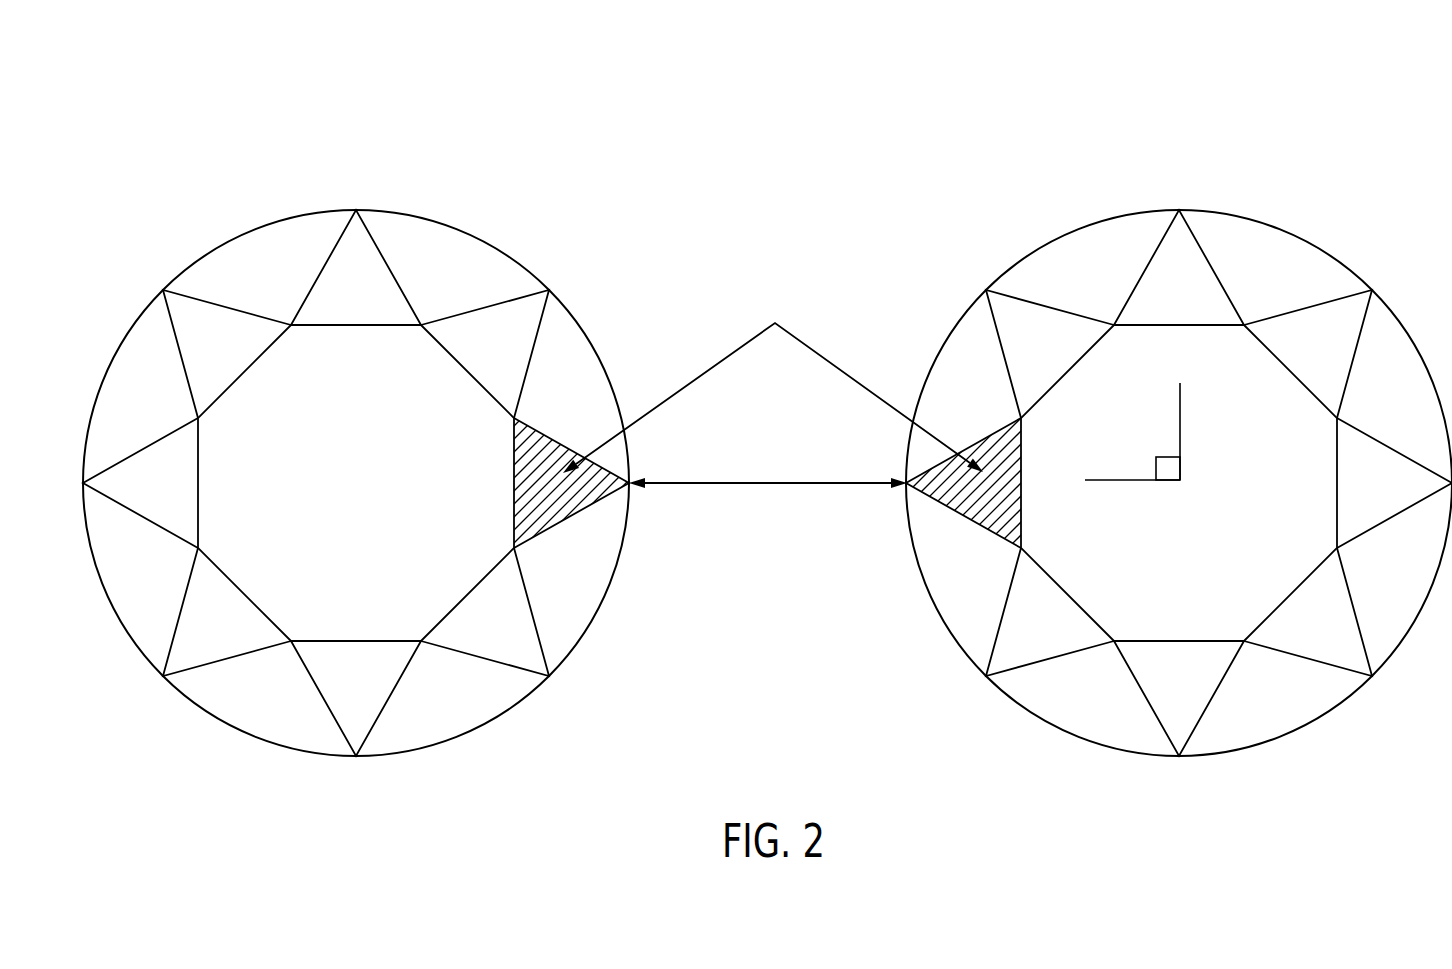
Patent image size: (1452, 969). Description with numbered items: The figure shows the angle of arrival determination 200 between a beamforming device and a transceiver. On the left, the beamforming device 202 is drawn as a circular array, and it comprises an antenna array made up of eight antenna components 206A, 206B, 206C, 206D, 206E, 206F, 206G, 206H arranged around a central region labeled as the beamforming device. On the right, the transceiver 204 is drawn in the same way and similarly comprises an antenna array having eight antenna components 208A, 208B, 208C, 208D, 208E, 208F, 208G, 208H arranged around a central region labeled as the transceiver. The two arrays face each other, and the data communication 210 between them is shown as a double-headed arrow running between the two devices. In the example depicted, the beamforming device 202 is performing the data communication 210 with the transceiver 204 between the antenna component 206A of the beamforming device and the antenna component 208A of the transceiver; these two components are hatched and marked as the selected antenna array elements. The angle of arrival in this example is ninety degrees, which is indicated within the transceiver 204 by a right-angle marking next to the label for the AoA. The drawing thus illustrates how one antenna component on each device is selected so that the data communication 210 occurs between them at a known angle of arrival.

The angle of arrival determination 200 is at (180, 115).
The beamforming device 202 is at (361, 499).
The transceiver 204 is at (1166, 499).
The antenna component 206A is at (543, 430).
The antenna component 206B is at (534, 618).
The antenna component 206C is at (397, 687).
The antenna component 206D is at (250, 652).
The antenna component 206E is at (148, 518).
The antenna component 206F is at (177, 337).
The antenna component 206G is at (330, 253).
The antenna component 206H is at (478, 308).
The antenna component 208A is at (960, 517).
The antenna component 208B is at (1073, 652).
The antenna component 208C is at (1220, 687).
The antenna component 208D is at (1357, 618).
The antenna component 208E is at (1367, 430).
The antenna component 208F is at (1302, 307).
The antenna component 208G is at (1153, 253).
The antenna component 208H is at (1000, 337).
The data communication 210 is at (773, 483).